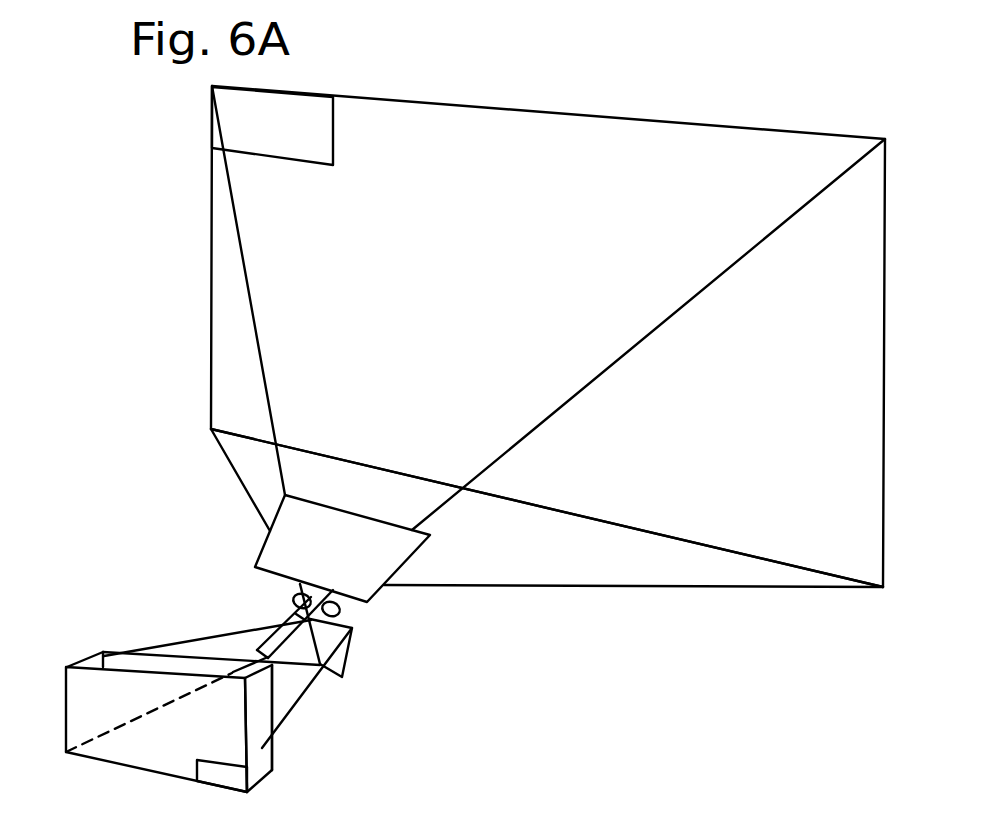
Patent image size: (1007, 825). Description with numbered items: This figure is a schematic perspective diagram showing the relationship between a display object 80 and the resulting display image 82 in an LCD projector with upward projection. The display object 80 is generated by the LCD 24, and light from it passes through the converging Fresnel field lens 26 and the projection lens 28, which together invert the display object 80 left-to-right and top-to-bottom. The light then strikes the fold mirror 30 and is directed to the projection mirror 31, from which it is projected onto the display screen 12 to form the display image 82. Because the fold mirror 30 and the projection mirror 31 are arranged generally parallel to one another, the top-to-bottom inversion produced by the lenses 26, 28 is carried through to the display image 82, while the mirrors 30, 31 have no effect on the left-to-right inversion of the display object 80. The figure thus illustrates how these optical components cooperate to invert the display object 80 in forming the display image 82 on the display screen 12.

The display screen 12 is at (742, 146).
The display image 82 is at (640, 113).
The projection mirror 31 is at (270, 553).
The projection lens 28 is at (340, 608).
The fold mirror 30 is at (338, 665).
The display object 80 is at (58, 705).
The LCD 24 is at (152, 765).
The converging Fresnel field lens 26 is at (257, 718).